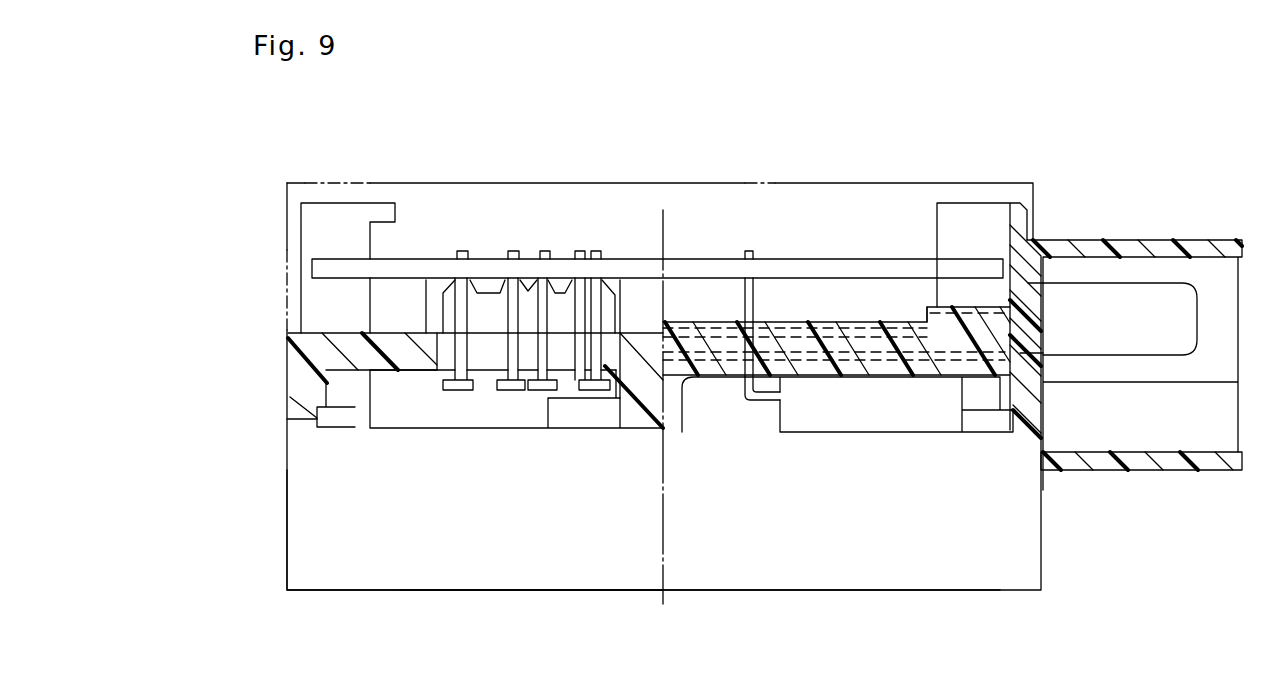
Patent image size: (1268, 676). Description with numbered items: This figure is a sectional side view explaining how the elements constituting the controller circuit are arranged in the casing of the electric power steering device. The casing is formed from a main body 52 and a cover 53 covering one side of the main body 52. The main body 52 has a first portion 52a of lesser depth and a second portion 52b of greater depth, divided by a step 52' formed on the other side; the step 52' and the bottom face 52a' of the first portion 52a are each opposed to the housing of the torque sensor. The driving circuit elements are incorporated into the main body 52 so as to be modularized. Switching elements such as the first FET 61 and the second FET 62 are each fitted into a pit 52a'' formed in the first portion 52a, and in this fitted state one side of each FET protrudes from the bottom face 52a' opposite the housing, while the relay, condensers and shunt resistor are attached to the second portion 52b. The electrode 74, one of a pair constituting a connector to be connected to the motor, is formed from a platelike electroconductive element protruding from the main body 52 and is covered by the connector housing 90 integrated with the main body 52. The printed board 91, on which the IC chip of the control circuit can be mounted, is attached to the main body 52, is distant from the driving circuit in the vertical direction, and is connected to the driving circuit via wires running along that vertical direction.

The main body 52 is at (626, 393).
The step 52' is at (435, 530).
The first portion 52a is at (610, 354).
The bottom face 52a' is at (262, 435).
The pit 52a'' is at (531, 432).
The second portion 52b is at (450, 573).
The cover 53 is at (604, 182).
The first FET 61 is at (857, 412).
The second FET 62 is at (476, 427).
The electrode 74 is at (1116, 297).
The connector housing 90 is at (1153, 470).
The printed board 91 is at (694, 265).